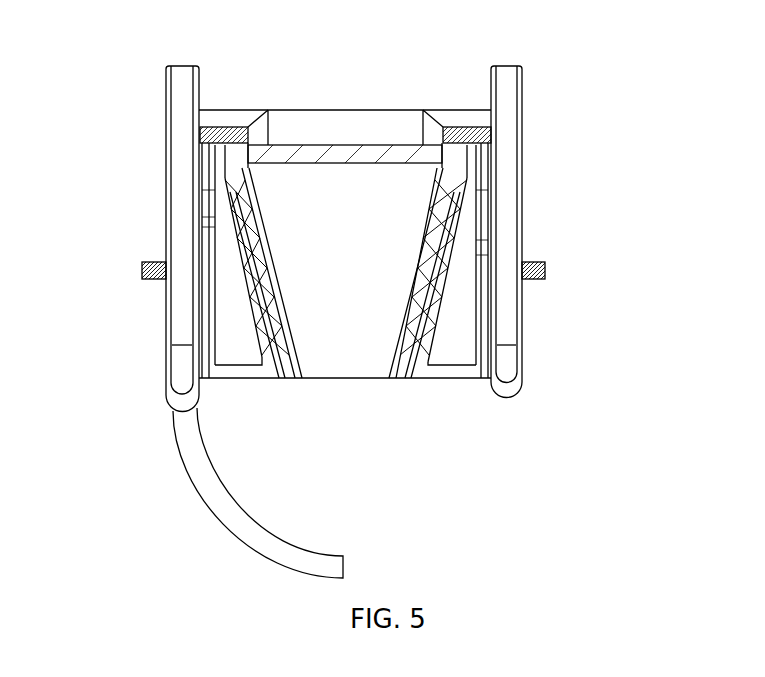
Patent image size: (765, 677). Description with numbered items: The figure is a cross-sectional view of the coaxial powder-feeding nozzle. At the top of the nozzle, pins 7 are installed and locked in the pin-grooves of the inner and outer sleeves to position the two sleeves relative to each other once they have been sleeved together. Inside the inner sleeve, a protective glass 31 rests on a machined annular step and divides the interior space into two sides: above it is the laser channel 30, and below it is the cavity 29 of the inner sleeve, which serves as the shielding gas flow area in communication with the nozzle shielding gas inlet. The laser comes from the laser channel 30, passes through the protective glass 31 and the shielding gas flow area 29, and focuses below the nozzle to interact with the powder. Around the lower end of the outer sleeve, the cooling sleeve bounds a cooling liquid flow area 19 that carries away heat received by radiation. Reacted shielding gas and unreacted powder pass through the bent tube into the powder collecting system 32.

The pin 7 is at (185, 123).
The flow area 19 is at (455, 223).
The cavity of inner sleeve 29 is at (330, 200).
The laser channel 30 is at (330, 120).
The protective glass 31 is at (385, 152).
The upper tube section of powder collecting tube 32 is at (183, 233).